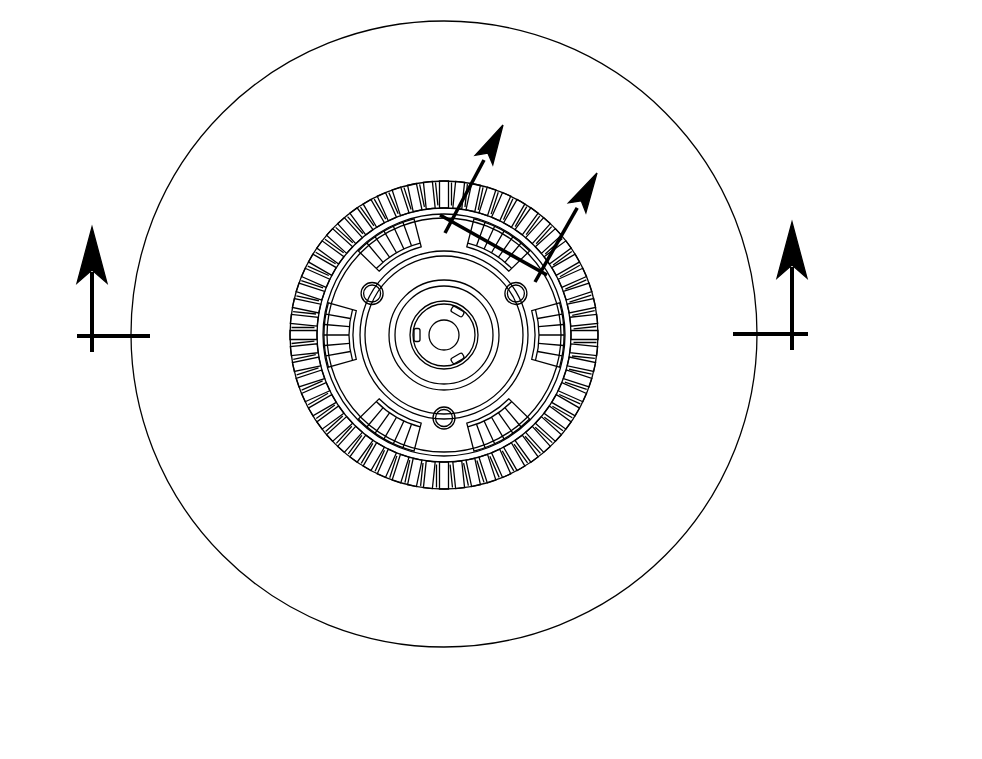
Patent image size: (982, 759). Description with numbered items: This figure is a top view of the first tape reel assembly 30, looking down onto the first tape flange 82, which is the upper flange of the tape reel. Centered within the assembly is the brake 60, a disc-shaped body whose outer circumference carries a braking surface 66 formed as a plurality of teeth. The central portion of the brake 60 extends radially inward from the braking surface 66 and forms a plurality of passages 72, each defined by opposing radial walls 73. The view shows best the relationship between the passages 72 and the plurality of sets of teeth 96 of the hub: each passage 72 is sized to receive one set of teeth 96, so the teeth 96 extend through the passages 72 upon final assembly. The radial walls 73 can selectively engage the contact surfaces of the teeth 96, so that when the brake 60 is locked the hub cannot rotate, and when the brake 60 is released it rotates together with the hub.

The first tape reel assembly 30 is at (625, 48).
The first tape flange 82 is at (738, 417).
The braking surface 66 is at (585, 311).
The brake 60 is at (540, 385).
The passages 72 is at (420, 441).
The opposing radial walls 73 is at (395, 228).
The sets of teeth 96 is at (468, 430).